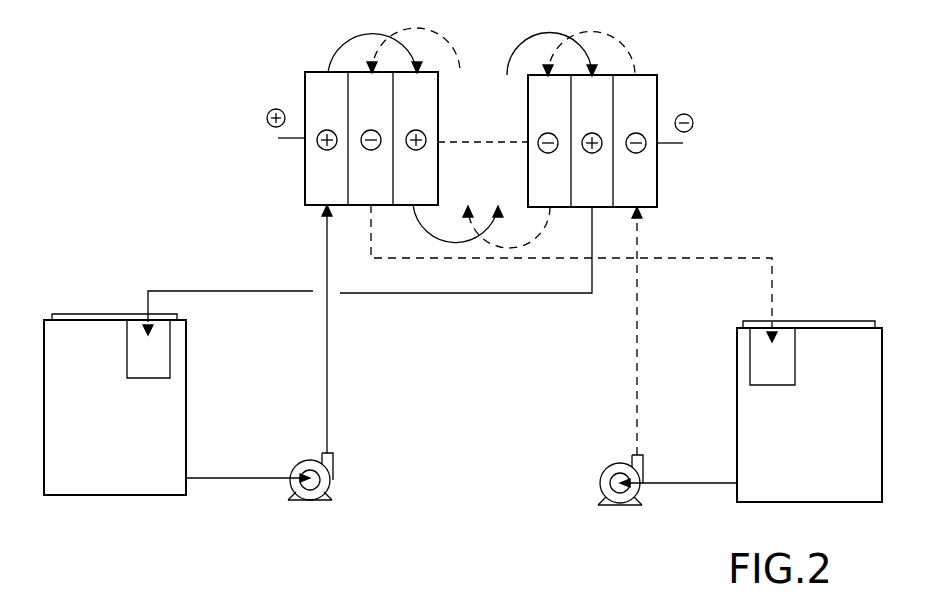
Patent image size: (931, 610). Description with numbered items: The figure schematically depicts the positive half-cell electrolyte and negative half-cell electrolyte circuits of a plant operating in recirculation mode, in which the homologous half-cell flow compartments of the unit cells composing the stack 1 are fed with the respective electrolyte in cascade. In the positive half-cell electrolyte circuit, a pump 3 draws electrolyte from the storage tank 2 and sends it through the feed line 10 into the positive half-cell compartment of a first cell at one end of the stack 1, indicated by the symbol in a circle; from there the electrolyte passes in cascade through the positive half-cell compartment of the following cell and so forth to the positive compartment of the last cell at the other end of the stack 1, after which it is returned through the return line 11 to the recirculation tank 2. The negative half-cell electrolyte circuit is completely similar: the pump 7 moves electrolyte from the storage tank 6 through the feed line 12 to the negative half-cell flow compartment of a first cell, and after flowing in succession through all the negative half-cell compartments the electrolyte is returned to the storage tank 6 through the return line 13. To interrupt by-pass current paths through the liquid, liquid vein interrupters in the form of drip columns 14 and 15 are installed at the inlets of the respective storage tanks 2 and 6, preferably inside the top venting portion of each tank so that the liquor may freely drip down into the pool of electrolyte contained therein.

The stack 1 is at (663, 97).
The storage tank 2 is at (192, 435).
The pump 3 is at (337, 480).
The storage tank 6 is at (773, 440).
The pump 7 is at (600, 483).
The feed line 10 is at (333, 410).
The return line 11 is at (243, 289).
The feed line 12 is at (635, 372).
The return line 13 is at (700, 253).
The liquid vein interrupter 14 is at (162, 365).
The liquid vein interrupter 15 is at (790, 380).